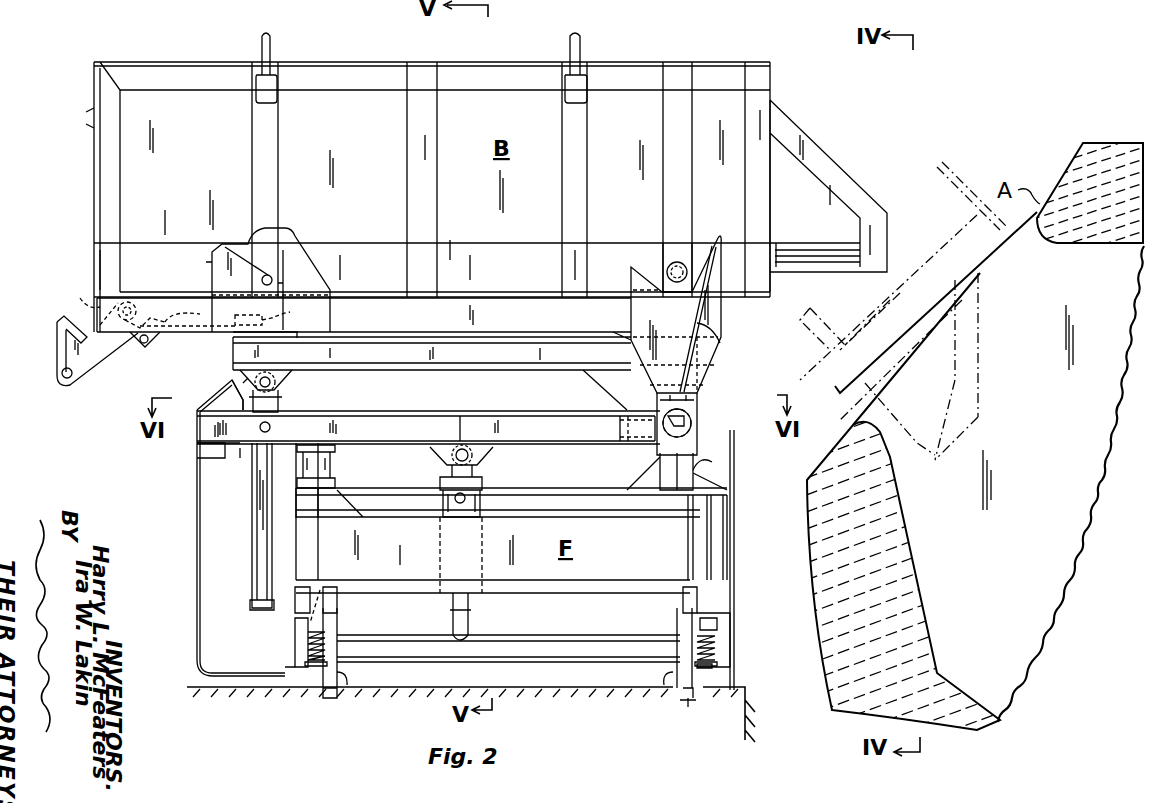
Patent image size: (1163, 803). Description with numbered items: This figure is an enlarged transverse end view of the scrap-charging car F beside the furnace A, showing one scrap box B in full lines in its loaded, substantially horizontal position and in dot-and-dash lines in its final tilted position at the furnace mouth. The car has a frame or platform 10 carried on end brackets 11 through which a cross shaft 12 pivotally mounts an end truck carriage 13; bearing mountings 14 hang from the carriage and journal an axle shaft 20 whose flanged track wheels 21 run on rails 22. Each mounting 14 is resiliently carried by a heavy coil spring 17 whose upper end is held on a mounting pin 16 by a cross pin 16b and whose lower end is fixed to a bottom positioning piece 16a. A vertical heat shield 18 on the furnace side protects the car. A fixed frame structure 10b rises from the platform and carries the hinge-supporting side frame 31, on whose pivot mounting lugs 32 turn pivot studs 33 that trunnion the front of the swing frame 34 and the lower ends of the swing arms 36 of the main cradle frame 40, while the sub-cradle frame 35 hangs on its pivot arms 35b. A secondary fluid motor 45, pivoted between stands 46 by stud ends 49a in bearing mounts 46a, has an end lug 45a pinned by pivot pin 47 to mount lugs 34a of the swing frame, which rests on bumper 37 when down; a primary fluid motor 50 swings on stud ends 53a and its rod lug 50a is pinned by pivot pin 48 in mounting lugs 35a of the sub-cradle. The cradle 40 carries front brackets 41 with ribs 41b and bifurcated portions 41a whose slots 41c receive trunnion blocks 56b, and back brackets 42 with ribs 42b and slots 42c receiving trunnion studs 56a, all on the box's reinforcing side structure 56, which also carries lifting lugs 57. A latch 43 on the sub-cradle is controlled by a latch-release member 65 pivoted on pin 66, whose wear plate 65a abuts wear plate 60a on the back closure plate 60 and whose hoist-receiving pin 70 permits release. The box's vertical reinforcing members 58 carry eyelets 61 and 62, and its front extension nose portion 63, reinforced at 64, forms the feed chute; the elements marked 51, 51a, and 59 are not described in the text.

The frame or platform 10 is at (643, 580).
The fixed frame structure 10b is at (682, 530).
The end brackets 11 is at (325, 595).
The cross shaft 12 is at (338, 605).
The end truck carriage 13 is at (296, 625).
The end bearing mounting 14 is at (296, 672).
The mounting pin 16 is at (318, 588).
The bottom positioning piece 16a is at (320, 688).
The cross pin 16b is at (305, 634).
The coil spring 17 is at (306, 644).
The heat shield 18 is at (735, 480).
The axle shaft 20 is at (586, 637).
The flanged track wheel 21 is at (348, 688).
The rails 22 is at (690, 708).
The hinge-supporting side frame 31 is at (698, 472).
The pivot mounting lugs 32 is at (660, 446).
The pivot studs 33 is at (692, 428).
The swing frame 34 is at (550, 408).
The mount lugs 34a is at (445, 460).
The sub-cradle frame 35 is at (495, 371).
The mounting lugs 35a is at (290, 375).
The pivot arms 35b is at (622, 398).
The swing arms 36 is at (697, 402).
The bumper 37 is at (336, 462).
The main cradle frame 40 is at (478, 334).
The front guide-positioning brackets 41 is at (720, 310).
The bifurcated portions 41a is at (696, 240).
The reinforcing side rib portions 41b is at (720, 337).
The trunnion-receiving positioning portions 41c is at (688, 293).
The back side-positioning brackets 42 is at (331, 302).
The reinforcing ribs 42b is at (208, 263).
The slotted portion 42c is at (246, 240).
The latch 43 is at (290, 312).
The secondary fluid motor 45 is at (470, 600).
The end lug 45a is at (485, 478).
The stands 46 is at (415, 530).
The bearing mounts 46a is at (484, 506).
The pivot pin 47 is at (475, 462).
The pivot pin 48 is at (232, 380).
The stud ends 49a is at (455, 499).
The primary fluid motor 50 is at (252, 580).
The lug 50a is at (280, 396).
The side plate 51 is at (196, 520).
The plate flange 51a is at (198, 450).
The stud ends 53a is at (261, 431).
The reinforcing side structure 56 is at (373, 244).
The positioning trunnion studs 56a is at (263, 283).
The trunnion blocks 56b is at (665, 255).
The lifting lugs 57 is at (682, 262).
The vertical reinforcing members 58 is at (278, 142).
The top rail 59 is at (491, 63).
The back-end closure plate 60 is at (96, 184).
The wear plate 60a is at (92, 250).
The back eyelet 61 is at (94, 130).
The eyelets 62 is at (272, 42).
The extension nose portion 63 is at (820, 272).
The reinforcement 64 is at (845, 165).
The latch-release member 65 is at (100, 346).
The wear plate 65a is at (66, 316).
The pivot pin 66 is at (80, 298).
The hoist-receiving pin 70 is at (58, 378).